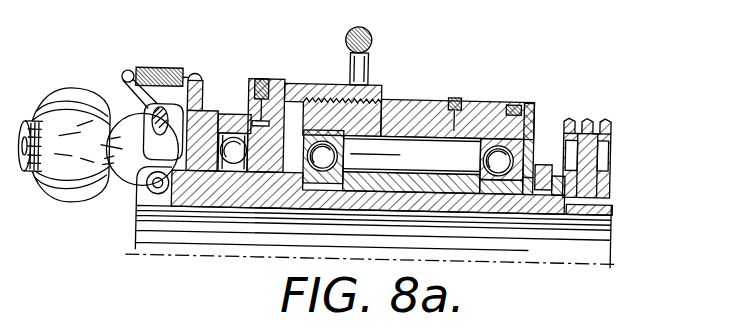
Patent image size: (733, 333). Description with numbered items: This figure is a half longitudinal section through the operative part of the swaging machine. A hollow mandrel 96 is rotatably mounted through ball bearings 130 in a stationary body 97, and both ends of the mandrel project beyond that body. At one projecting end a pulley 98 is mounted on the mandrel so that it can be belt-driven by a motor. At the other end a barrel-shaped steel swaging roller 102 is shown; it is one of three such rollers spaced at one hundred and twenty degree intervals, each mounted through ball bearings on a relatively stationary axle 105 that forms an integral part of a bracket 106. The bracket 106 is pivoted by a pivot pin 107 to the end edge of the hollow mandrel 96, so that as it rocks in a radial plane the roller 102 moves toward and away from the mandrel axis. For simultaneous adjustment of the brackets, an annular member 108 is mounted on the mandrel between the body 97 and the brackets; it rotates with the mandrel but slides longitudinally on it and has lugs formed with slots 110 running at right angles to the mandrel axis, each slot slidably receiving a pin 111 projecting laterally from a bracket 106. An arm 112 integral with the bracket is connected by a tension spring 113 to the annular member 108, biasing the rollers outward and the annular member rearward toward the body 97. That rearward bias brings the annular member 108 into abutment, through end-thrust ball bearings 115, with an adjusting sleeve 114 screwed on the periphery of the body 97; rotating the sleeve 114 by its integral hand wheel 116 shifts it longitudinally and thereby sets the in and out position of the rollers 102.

The hollow mandrel 96 is at (507, 208).
The stationary body 97 is at (428, 98).
The pulley 98 is at (567, 113).
The swaging roller 102 is at (58, 88).
The axle 105 is at (110, 197).
The bracket 106 is at (208, 110).
The pivot pin 107 is at (157, 194).
The annular member 108 is at (228, 115).
The slot 110 is at (135, 192).
The pin 111 is at (140, 112).
The arm 112 is at (122, 72).
The tension spring 113 is at (163, 66).
The adjusting sleeve 114 is at (293, 82).
The end-thrust ball bearings 115 is at (233, 152).
The hand wheel 116 is at (370, 43).
The ball bearings 130 is at (495, 150).